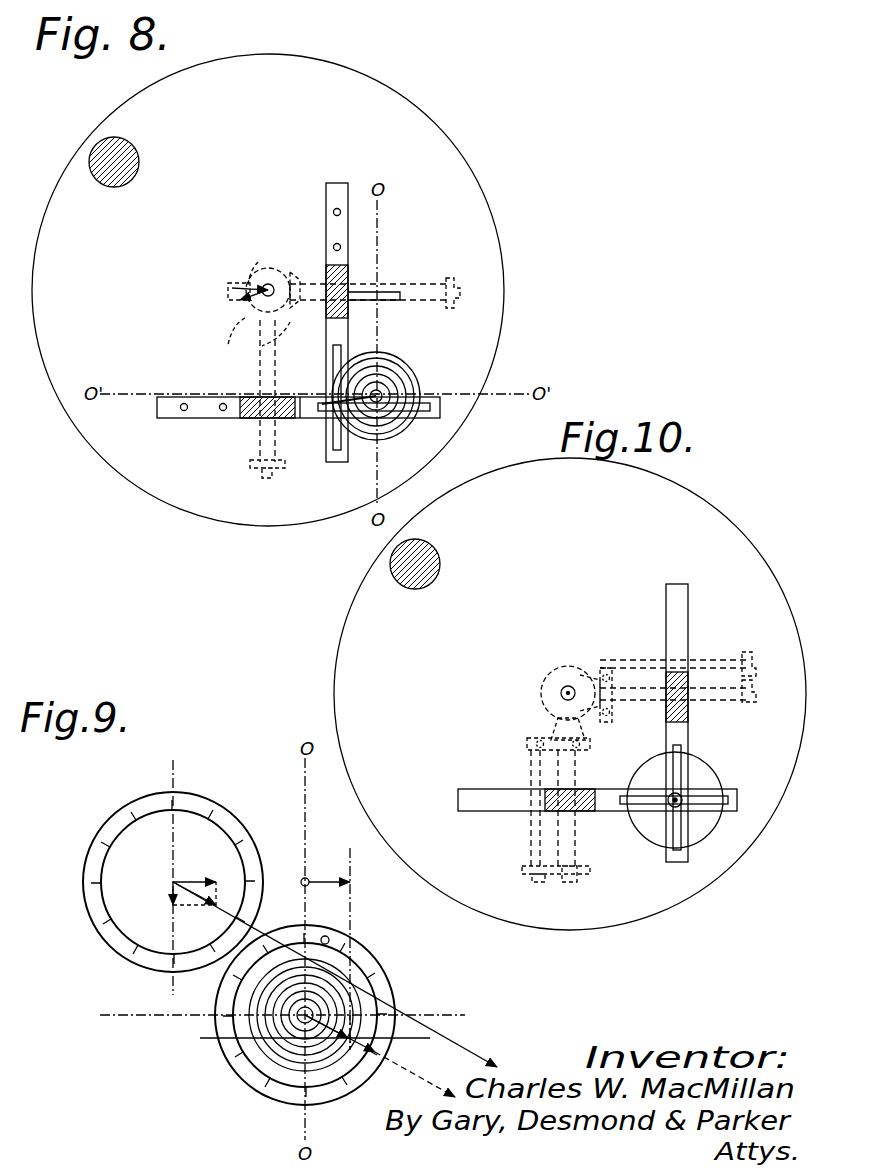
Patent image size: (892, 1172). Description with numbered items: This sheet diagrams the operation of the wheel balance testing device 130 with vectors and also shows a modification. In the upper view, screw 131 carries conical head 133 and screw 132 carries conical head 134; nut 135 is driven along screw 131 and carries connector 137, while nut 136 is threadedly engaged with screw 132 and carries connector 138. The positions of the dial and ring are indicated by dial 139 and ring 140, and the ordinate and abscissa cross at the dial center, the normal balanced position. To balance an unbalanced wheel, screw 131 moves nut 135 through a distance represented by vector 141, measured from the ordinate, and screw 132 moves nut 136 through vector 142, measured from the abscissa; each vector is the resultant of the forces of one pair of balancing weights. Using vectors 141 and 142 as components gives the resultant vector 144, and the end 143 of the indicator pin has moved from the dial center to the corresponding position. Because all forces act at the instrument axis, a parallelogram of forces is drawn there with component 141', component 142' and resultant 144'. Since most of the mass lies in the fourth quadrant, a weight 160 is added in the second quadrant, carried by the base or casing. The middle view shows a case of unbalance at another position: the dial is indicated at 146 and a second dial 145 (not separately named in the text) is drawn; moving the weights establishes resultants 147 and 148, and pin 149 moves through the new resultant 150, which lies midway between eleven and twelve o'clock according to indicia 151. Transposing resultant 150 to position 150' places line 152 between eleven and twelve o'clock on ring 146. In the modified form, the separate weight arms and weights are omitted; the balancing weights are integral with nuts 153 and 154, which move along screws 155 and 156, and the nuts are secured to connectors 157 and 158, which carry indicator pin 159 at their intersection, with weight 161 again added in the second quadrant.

In FIG. 8, the balance testing device 130 is at (463, 133).
In FIG. 8, the weight 160 is at (139, 164).
In FIG. 8, the screw 131 is at (390, 284).
In FIG. 8, the screw 132 is at (290, 350).
In FIG. 8, the conical head 133 is at (285, 275).
In FIG. 8, the conical head 134 is at (232, 332).
In FIG. 8, the nut 135 is at (348, 272).
In FIG. 8, the nut 136 is at (248, 418).
In FIG. 8, the connector 137 is at (350, 335).
In FIG. 8, the connector 138 is at (322, 397).
In FIG. 8, the dial 139 is at (400, 375).
In FIG. 8, the ring 140 is at (262, 270).
In FIG. 8, the vector 141 is at (390, 265).
In FIG. 8, the component 141' is at (226, 265).
In FIG. 8, the vector 142 is at (250, 389).
In FIG. 8, the component 142' is at (285, 350).
In FIG. 8, the end of indicator pin 143 is at (328, 416).
In FIG. 8, the vector 144 is at (354, 413).
In FIG. 8, the resultant 144' is at (224, 309).
In FIG. 9, the dial 145 is at (380, 975).
In FIG. 9, the dial 146 is at (215, 812).
In FIG. 9, the resultant 147 is at (325, 880).
In FIG. 9, the resultant 148 is at (160, 1028).
In FIG. 9, the pin 149 is at (388, 1014).
In FIG. 9, the new resultant 150 is at (352, 1028).
In FIG. 9, the transposed resultant 150' is at (200, 876).
In FIG. 9, the indicia 151 is at (330, 940).
In FIG. 9, the line 152 is at (428, 1026).
In FIG. 10, the nut 153 is at (580, 789).
In FIG. 10, the nut 154 is at (688, 712).
In FIG. 10, the screw 155 is at (572, 818).
In FIG. 10, the screw 156 is at (640, 705).
In FIG. 10, the connector 157 is at (690, 742).
In FIG. 10, the connector 158 is at (642, 814).
In FIG. 10, the indicator pin 159 is at (682, 794).
In FIG. 10, the weight 161 is at (441, 560).